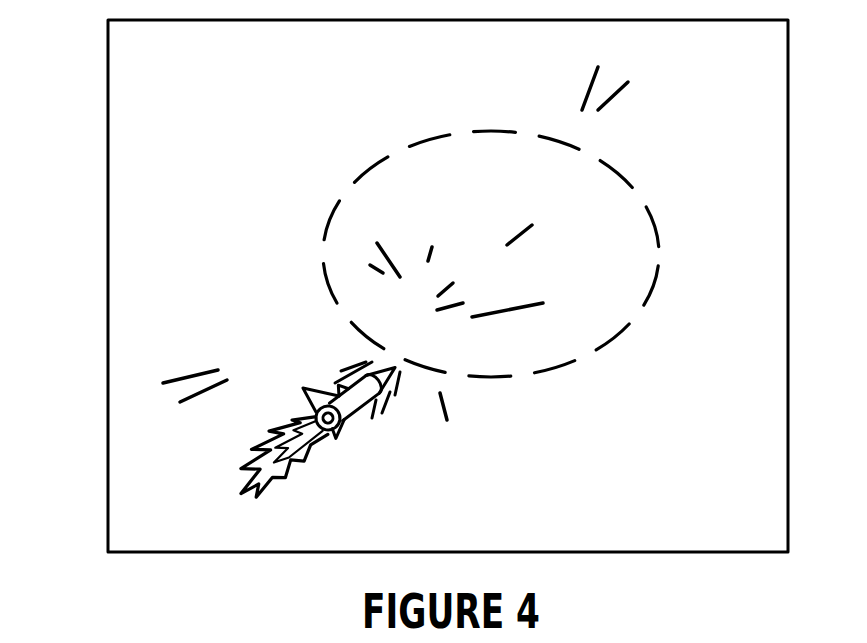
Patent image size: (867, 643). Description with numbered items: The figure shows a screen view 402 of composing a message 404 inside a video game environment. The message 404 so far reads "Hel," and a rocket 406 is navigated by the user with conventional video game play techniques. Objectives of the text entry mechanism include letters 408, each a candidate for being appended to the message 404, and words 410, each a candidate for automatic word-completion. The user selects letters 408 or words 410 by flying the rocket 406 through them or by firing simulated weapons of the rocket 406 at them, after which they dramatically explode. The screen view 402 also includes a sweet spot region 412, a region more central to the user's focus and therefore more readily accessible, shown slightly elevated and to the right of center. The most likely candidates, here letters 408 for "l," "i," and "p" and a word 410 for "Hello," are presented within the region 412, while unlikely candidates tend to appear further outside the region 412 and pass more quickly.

The screen view 402 is at (758, 543).
The message 404 is at (138, 75).
The rocket 406 is at (355, 420).
The letters 408 is at (135, 410).
The words 410 is at (541, 288).
The sweet spot region 412 is at (574, 358).